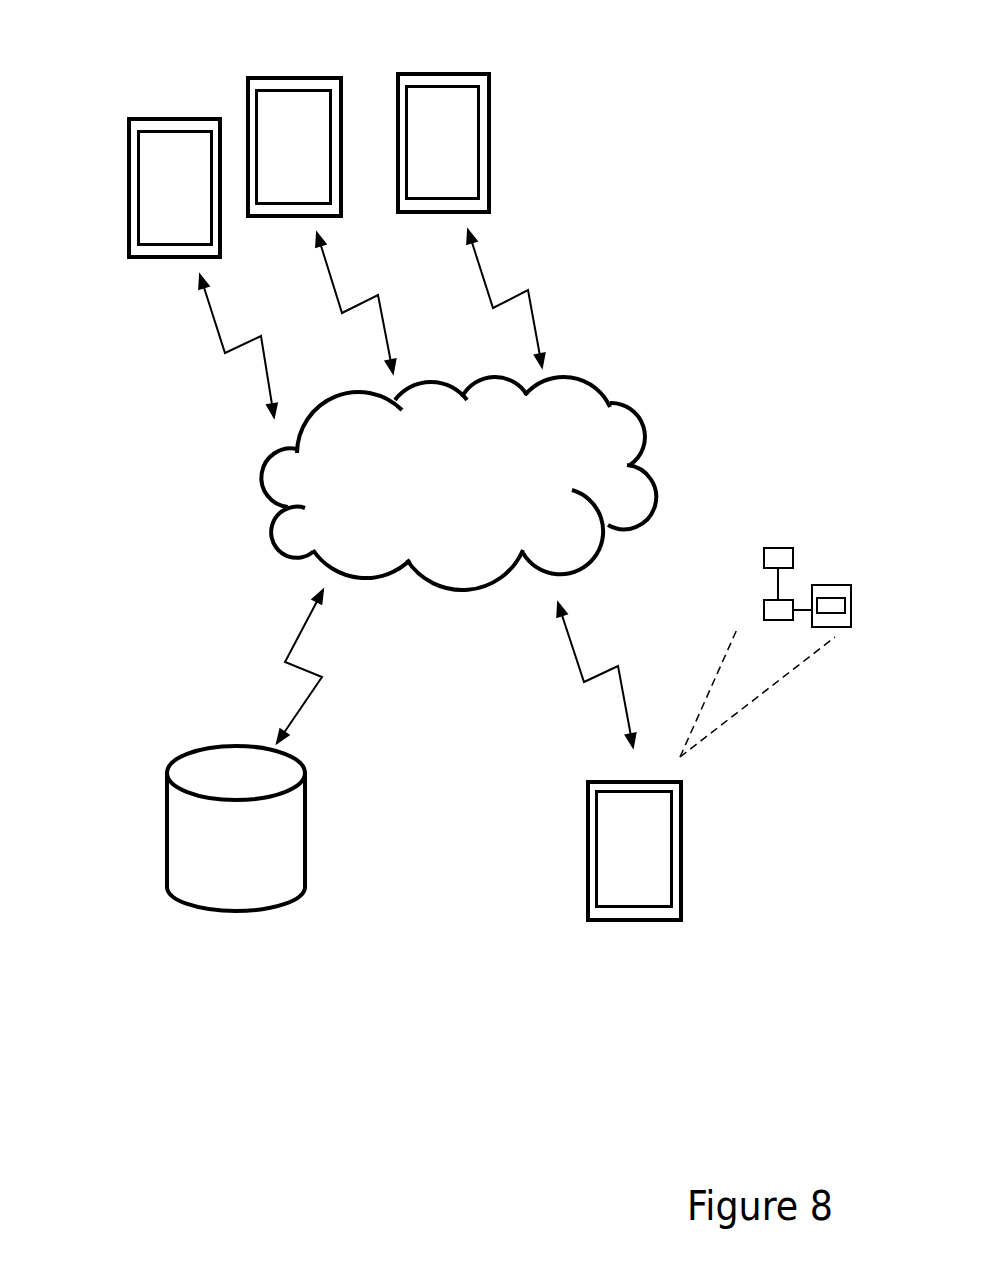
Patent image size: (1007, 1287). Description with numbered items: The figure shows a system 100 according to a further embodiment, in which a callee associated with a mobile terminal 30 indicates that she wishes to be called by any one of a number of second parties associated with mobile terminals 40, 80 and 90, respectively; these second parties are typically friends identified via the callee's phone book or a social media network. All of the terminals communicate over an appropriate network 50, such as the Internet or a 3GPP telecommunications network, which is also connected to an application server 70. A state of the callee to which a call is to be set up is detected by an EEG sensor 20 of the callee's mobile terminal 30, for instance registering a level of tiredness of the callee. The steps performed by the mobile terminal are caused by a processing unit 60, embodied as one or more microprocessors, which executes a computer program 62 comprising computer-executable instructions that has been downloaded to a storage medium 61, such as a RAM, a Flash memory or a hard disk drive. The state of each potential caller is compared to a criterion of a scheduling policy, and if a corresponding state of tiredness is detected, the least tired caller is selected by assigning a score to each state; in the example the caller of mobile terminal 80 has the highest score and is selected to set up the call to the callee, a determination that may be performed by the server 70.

The system 100 is at (683, 295).
The mobile terminal 90 is at (153, 123).
The mobile terminal 40 is at (283, 82).
The mobile terminal 80 is at (430, 77).
The network 50 is at (278, 475).
The application server 70 is at (192, 772).
The mobile terminal 30 is at (625, 785).
The EEG sensor 20 is at (775, 553).
The processing unit 60 is at (767, 608).
The storage medium 61 is at (847, 590).
The computer program 62 is at (833, 608).